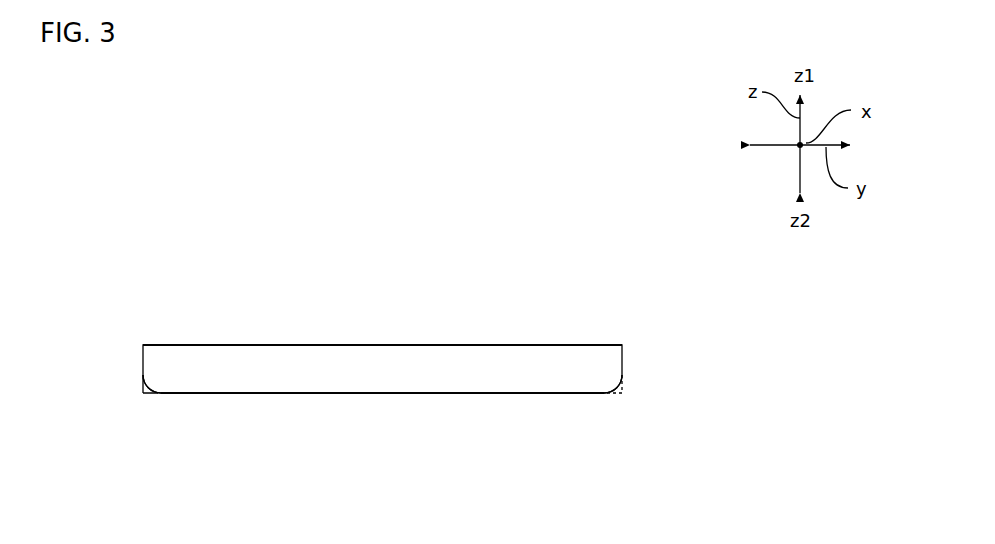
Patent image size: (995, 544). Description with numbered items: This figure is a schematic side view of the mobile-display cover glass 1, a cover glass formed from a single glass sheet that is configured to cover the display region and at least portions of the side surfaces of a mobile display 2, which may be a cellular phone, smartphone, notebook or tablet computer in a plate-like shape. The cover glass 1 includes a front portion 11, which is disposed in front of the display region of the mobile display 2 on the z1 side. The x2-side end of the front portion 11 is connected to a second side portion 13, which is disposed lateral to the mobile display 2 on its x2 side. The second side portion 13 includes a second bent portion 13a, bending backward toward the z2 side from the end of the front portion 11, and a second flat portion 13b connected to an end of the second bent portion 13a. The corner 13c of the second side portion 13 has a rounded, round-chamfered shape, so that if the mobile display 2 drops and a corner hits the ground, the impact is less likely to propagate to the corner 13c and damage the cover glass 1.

The mobile-display cover glass 1 is at (445, 344).
The mobile display 2 is at (149, 397).
The front portion 11 is at (348, 345).
The second side portion 13 is at (302, 395).
The second bent portion 13a is at (283, 356).
The second flat portion 13b is at (510, 385).
The corner 13c is at (143, 393).